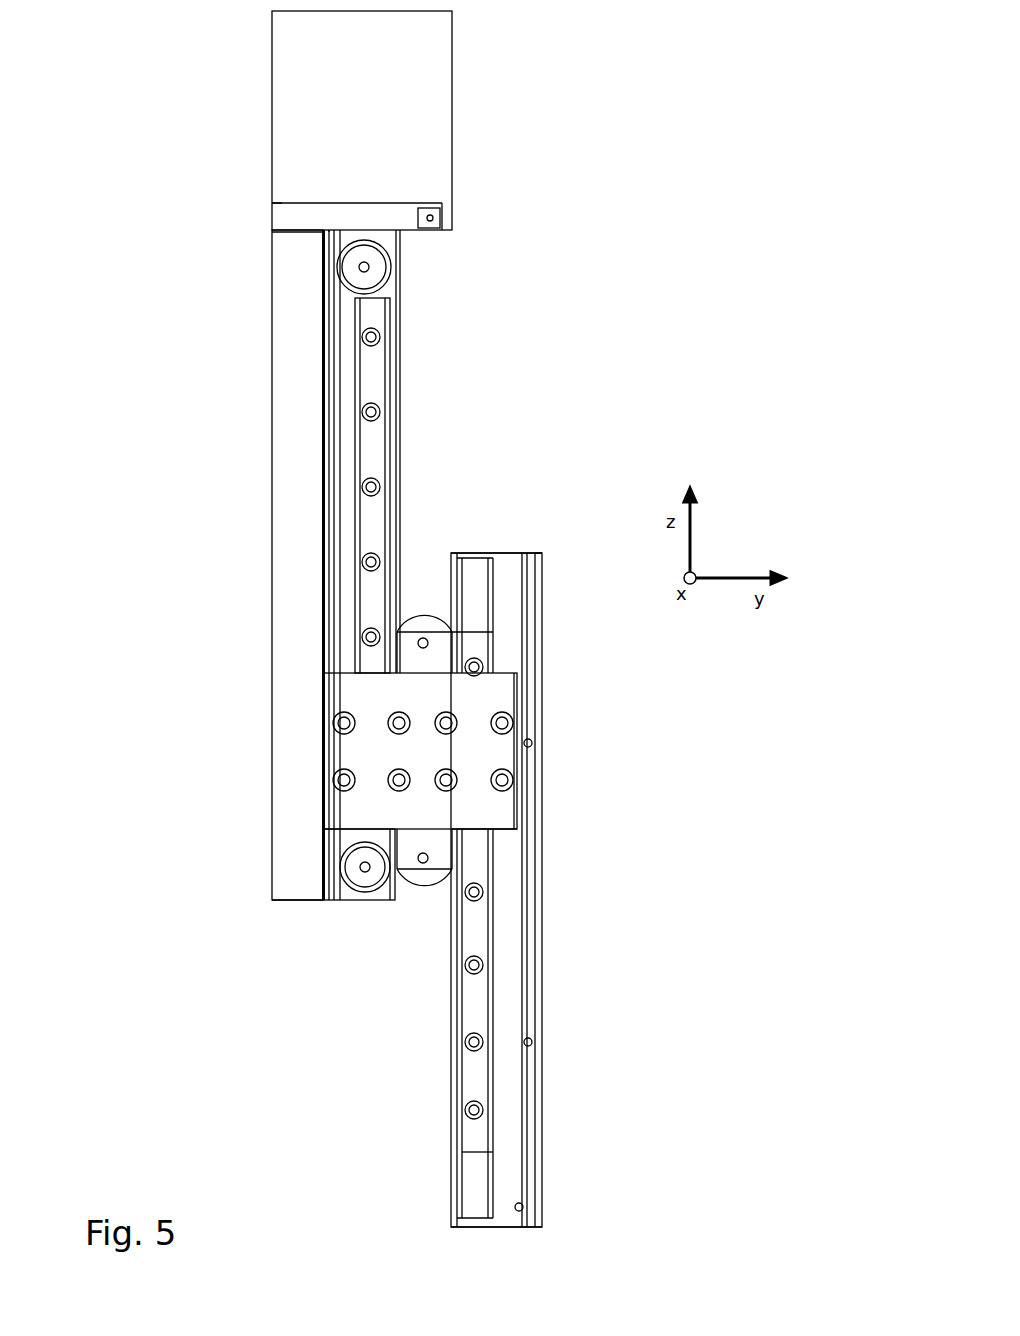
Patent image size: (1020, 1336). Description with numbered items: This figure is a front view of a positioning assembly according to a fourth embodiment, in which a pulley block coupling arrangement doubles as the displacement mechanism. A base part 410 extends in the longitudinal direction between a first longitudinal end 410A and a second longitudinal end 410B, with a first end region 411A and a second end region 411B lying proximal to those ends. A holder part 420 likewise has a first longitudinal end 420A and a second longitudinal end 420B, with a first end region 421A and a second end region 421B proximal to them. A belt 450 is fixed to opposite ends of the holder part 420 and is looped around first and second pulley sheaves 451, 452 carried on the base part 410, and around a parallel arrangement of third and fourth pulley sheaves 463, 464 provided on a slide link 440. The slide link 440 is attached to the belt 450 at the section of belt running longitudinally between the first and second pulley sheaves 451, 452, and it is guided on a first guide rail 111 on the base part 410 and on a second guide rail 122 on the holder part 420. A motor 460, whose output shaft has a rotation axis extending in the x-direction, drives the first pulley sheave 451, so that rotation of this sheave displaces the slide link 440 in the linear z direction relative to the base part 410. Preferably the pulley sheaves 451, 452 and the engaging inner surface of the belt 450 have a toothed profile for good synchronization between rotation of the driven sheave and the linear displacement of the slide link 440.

The motor 460 is at (383, 93).
The base part 410 is at (308, 306).
The first longitudinal end 410A is at (284, 213).
The second longitudinal end 410B is at (305, 901).
The first end region 411A is at (262, 248).
The second end region 411B is at (258, 883).
The first guide rail 111 is at (365, 452).
The belt 450 is at (398, 315).
The first pulley sheave 451 is at (372, 267).
The second pulley sheave 452 is at (360, 876).
The slide link 440 is at (345, 748).
The third pulley sheave 463 is at (427, 615).
The fourth pulley sheave 464 is at (415, 880).
The holder part 420 is at (510, 1090).
The first longitudinal end 420A is at (518, 556).
The second longitudinal end 420B is at (510, 1226).
The first end region 421A is at (550, 570).
The second end region 421B is at (552, 1207).
The second guide rail 122 is at (474, 941).